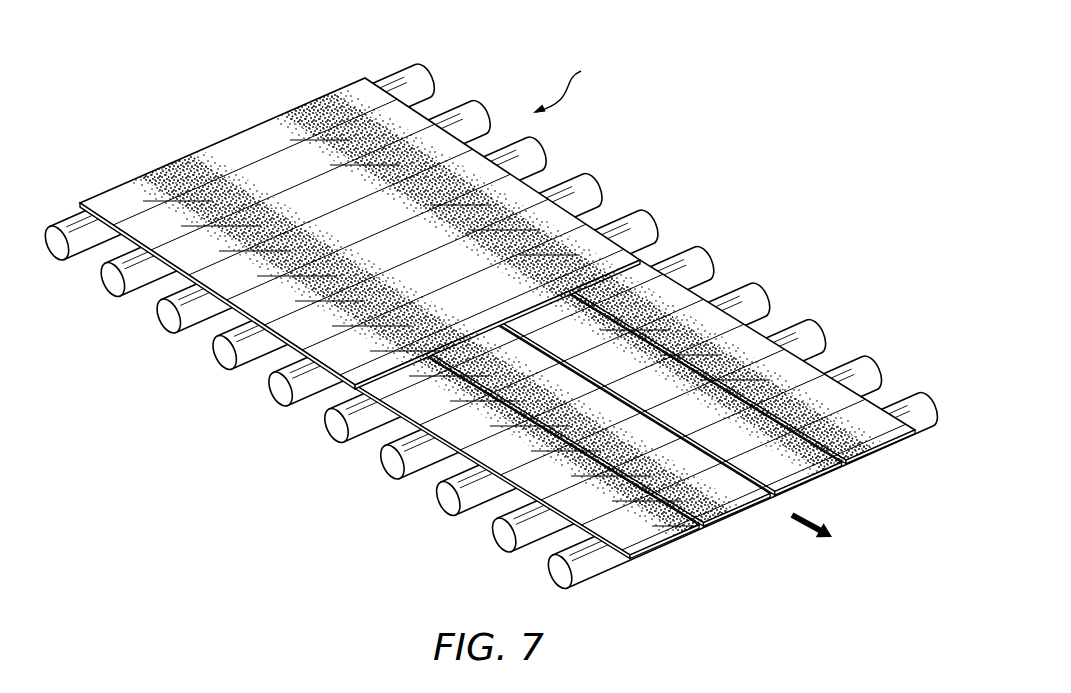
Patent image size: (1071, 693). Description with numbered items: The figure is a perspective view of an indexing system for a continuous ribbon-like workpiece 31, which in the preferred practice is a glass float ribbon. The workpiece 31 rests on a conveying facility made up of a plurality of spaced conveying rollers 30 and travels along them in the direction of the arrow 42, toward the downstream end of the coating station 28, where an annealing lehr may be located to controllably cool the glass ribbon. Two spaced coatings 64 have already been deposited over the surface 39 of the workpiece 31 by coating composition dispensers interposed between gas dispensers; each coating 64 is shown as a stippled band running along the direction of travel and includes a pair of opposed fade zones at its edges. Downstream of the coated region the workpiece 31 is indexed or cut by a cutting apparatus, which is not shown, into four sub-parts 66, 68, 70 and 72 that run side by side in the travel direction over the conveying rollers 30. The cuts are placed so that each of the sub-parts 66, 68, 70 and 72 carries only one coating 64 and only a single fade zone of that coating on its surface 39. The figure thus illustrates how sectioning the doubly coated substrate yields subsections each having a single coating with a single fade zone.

The downstream end of the coating station 28 is at (567, 78).
The conveying rollers 30 is at (280, 398).
The workpiece 31 is at (109, 200).
The surface of the workpiece 39 is at (242, 140).
The arrow 42 is at (793, 520).
The coatings 64 is at (168, 183).
The sub-part 66 is at (888, 440).
The sub-part 68 is at (803, 487).
The sub-part 70 is at (743, 500).
The sub-part 72 is at (637, 540).